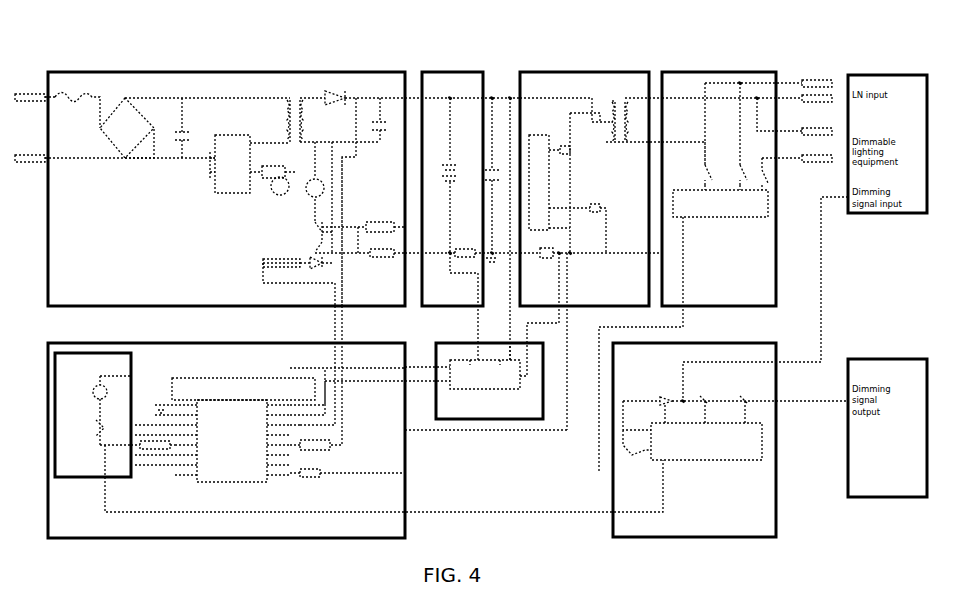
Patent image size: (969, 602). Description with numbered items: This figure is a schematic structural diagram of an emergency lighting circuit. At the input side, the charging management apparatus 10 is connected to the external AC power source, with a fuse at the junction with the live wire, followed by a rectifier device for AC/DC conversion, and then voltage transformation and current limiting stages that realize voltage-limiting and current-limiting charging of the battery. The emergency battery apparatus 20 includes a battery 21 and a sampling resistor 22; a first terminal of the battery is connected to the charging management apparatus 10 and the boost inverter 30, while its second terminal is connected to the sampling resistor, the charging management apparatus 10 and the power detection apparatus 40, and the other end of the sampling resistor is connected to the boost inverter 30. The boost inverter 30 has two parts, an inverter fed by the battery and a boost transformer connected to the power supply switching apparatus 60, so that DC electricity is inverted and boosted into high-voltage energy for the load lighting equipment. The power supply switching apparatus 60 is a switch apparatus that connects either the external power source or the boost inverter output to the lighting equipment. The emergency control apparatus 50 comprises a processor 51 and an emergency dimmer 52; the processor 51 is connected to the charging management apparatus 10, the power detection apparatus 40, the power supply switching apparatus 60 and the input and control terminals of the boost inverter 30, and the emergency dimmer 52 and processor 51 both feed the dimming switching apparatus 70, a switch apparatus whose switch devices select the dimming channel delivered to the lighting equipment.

The charging management apparatus 10 is at (222, 72).
The emergency battery apparatus 20 is at (458, 72).
The first energy storage unit IS1 21 is at (455, 168).
The resistor 22 is at (458, 250).
The boost inverter 30 is at (585, 72).
The power detection apparatus 40 is at (543, 377).
The emergency control apparatus 50 is at (215, 343).
The processor 51 is at (240, 400).
The emergency dimmer 52 is at (115, 420).
The power supply switching apparatus 60 is at (775, 252).
The dimming switching apparatus 70 is at (778, 465).